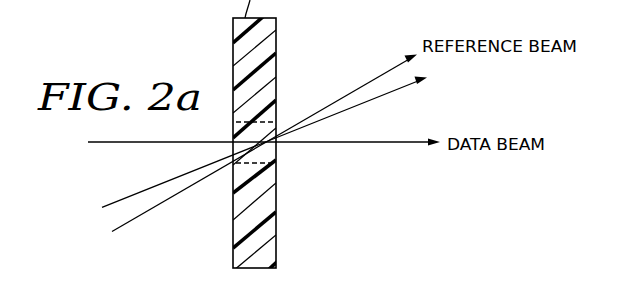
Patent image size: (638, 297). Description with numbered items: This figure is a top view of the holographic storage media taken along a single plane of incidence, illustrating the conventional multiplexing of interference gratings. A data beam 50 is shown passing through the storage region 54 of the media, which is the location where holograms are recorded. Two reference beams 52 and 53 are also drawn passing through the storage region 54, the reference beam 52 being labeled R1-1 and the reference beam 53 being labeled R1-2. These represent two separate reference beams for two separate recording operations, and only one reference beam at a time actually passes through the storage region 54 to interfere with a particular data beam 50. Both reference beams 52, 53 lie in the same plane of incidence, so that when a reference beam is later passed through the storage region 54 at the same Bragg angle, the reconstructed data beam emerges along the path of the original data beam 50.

The data beam 50 is at (357, 142).
The reference beam 52 is at (372, 80).
The reference beam 53 is at (411, 85).
The storage region 54 is at (276, 146).
The reference beam label R1-1 is at (175, 196).
The reference beam label R1-2 is at (158, 181).